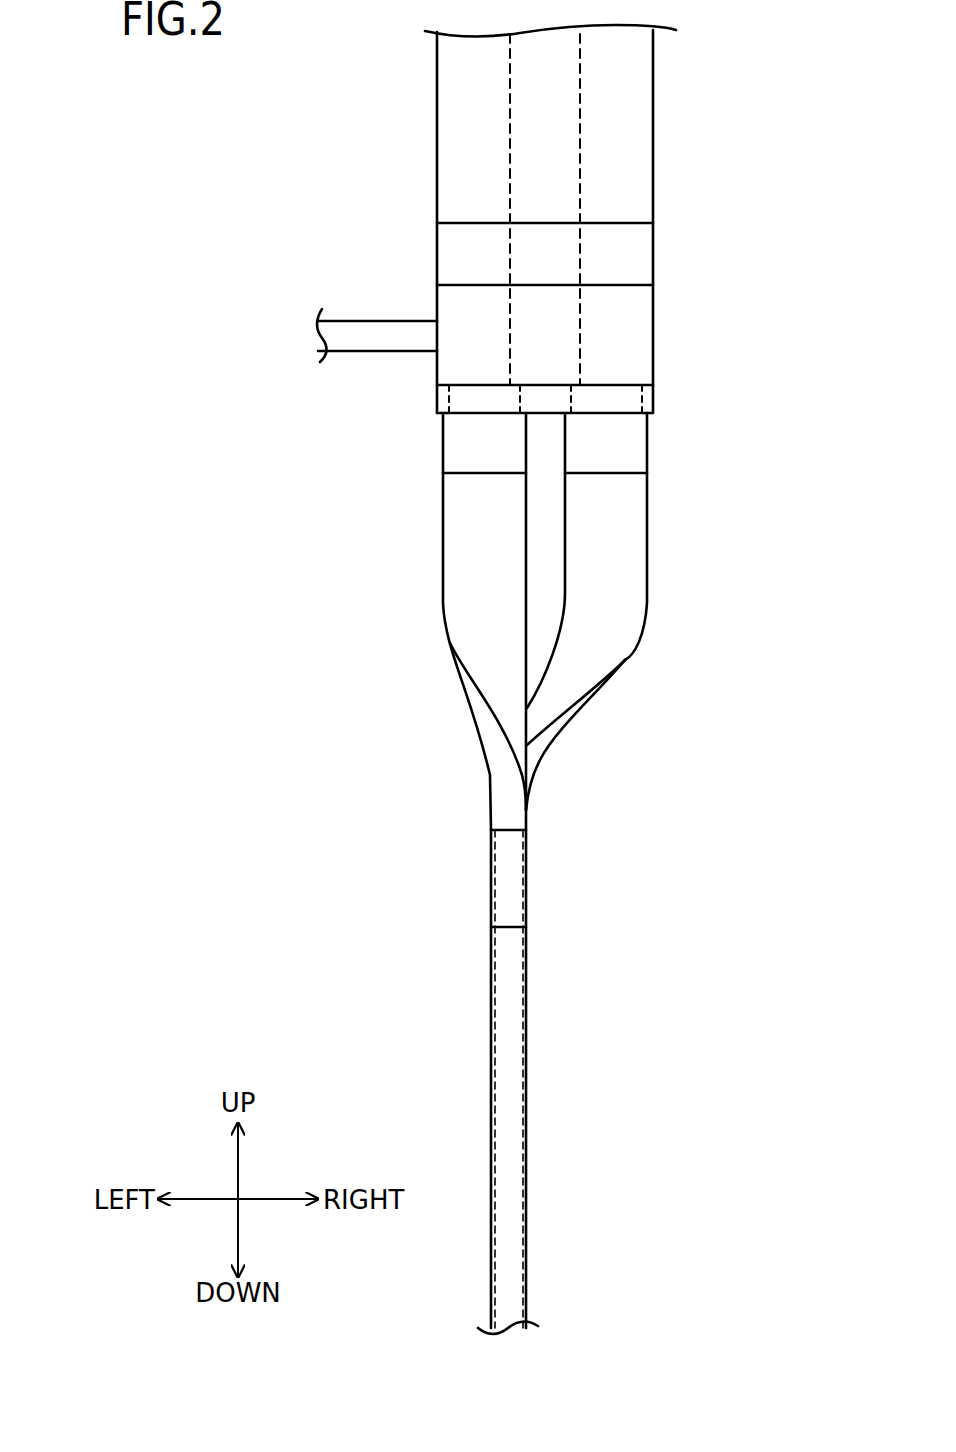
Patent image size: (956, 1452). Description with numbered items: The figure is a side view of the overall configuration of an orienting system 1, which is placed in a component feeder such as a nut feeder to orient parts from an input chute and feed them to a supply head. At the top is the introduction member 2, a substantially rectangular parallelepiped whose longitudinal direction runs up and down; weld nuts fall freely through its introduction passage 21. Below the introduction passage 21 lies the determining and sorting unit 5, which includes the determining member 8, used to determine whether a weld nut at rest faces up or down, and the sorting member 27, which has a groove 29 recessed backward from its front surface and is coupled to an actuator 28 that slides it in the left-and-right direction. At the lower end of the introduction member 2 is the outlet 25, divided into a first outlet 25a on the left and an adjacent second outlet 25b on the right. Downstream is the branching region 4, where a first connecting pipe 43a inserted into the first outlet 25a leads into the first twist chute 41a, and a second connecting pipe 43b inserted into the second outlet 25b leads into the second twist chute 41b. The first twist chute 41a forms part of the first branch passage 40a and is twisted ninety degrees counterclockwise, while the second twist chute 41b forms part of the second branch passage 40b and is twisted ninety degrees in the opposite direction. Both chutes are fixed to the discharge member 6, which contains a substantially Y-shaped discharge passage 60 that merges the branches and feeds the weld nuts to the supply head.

The orienting system 1 is at (544, 679).
The introduction member 2 is at (533, 282).
The introduction passage 21 is at (558, 170).
The determining member 8 is at (637, 258).
The actuator 28 is at (371, 318).
The determining and sorting unit 5 is at (548, 354).
The groove 29 is at (545, 343).
The sorting member 27 is at (437, 377).
The outlet 25 is at (548, 462).
The first outlet 25a is at (477, 405).
The second outlet 25b is at (617, 405).
The branching region 4 is at (562, 870).
The first connecting pipe 43a is at (486, 460).
The second connecting pipe 43b is at (603, 460).
The first twist chute 41a is at (502, 778).
The second twist chute 41b is at (615, 605).
The first branch passage 40a is at (490, 802).
The second branch passage 40b is at (620, 668).
The discharge member 6 is at (520, 1082).
The discharge passage 60 is at (505, 972).